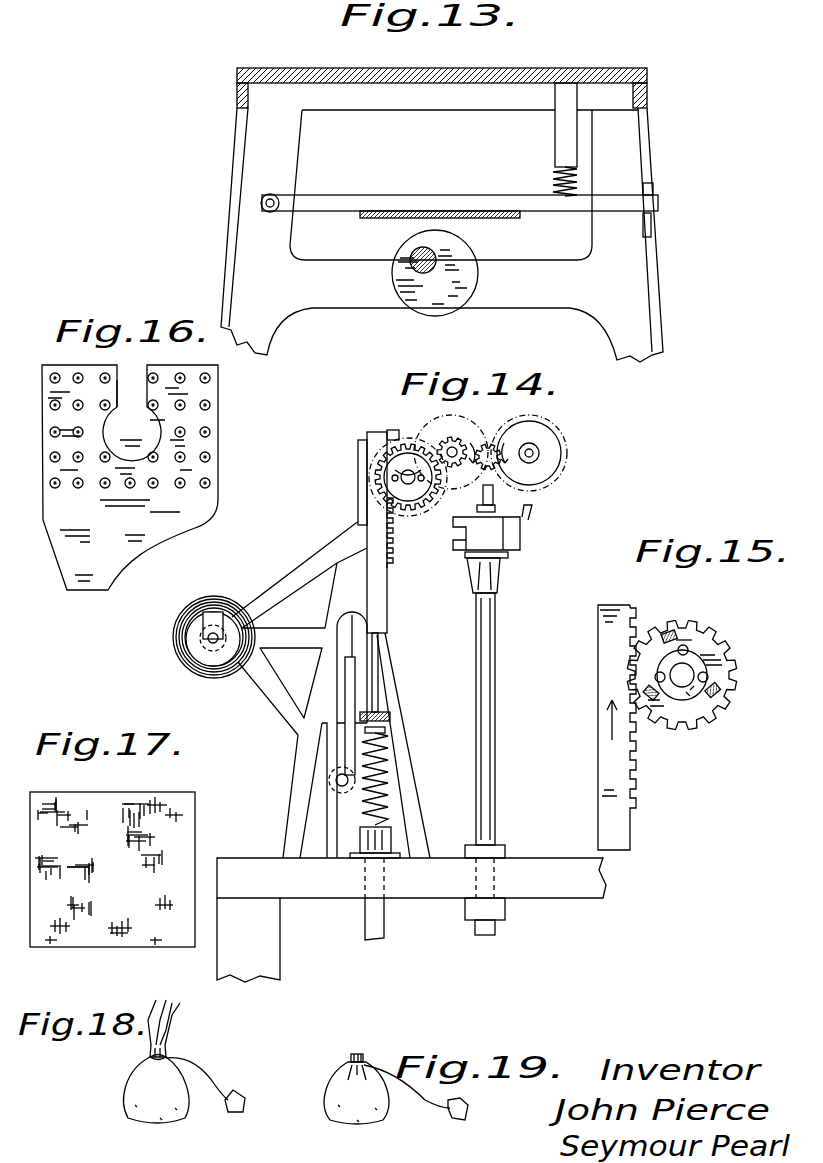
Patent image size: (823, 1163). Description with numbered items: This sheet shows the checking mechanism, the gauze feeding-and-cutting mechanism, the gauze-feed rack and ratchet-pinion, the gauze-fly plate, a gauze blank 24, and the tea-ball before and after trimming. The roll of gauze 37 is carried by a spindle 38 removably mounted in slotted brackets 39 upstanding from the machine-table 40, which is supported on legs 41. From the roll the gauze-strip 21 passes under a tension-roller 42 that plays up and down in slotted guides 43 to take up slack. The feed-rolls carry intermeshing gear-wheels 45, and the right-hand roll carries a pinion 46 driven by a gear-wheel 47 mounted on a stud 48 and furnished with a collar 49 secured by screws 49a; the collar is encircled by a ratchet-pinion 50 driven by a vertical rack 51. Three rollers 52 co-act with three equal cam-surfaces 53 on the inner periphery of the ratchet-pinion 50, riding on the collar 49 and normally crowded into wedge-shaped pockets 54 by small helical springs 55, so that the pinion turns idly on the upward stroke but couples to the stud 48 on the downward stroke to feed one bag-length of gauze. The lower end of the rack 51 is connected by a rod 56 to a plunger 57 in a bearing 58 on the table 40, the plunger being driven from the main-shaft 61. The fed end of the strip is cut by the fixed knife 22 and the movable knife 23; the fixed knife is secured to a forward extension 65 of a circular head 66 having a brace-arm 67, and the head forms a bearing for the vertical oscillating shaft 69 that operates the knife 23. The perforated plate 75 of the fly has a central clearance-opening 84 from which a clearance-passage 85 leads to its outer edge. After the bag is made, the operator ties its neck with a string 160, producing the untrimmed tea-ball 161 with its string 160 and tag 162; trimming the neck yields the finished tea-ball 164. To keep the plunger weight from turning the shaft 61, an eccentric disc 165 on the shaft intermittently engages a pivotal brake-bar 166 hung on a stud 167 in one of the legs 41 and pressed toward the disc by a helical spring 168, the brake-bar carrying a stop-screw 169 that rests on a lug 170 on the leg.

In FIG. 14, the gauze-strip 21 is at (338, 624).
In FIG. 14, the fixed knife 22 is at (529, 514).
In FIG. 14, the knife 23 is at (505, 562).
In FIG. 17, the abrasive plate 24 is at (190, 833).
In FIG. 14, the roll of gauze 37 is at (174, 646).
In FIG. 14, the spindle 38 is at (210, 643).
In FIG. 14, the slotted brackets 39 is at (312, 568).
In FIG. 13, the machine-table 40 is at (608, 80).
In FIG. 14, the machine-table 40 is at (576, 888).
In FIG. 13, the legs 41 is at (232, 254).
In FIG. 14, the legs 41 is at (278, 970).
In FIG. 14, the tension-roller 42 is at (336, 780).
In FIG. 14, the slotted guides 43 is at (327, 815).
In FIG. 14, the intermeshing gear-wheels 45 is at (448, 421).
In FIG. 14, the pinion 46 is at (458, 443).
In FIG. 14, the gear-wheel 47 is at (420, 498).
In FIG. 14, the stud 48 is at (408, 468).
In FIG. 15, the stud 48 is at (700, 668).
In FIG. 15, the collar 49 is at (676, 700).
In FIG. 14, the screws 49a is at (408, 505).
In FIG. 14, the ratchet-pinion 50 is at (425, 520).
In FIG. 15, the ratchet-pinion 50 is at (733, 677).
In FIG. 14, the vertical rack 51 is at (388, 587).
In FIG. 15, the vertical rack 51 is at (600, 772).
In FIG. 15, the rollers 52 is at (690, 640).
In FIG. 15, the cam-surfaces 53 is at (702, 650).
In FIG. 15, the wedge-shaped pockets 54 is at (690, 700).
In FIG. 15, the helical springs 55 is at (676, 640).
In FIG. 14, the rod 56 is at (380, 697).
In FIG. 14, the plunger 57 is at (386, 923).
In FIG. 14, the bearing 58 is at (395, 840).
In FIG. 13, the main-shaft 61 is at (412, 255).
In FIG. 14, the forward extension 65 is at (521, 539).
In FIG. 14, the circular head 66 is at (471, 556).
In FIG. 14, the brace-arm 67 is at (508, 548).
In FIG. 14, the oscillating shaft 69 is at (496, 701).
In FIG. 16, the perforated plate 75 is at (212, 471).
In FIG. 16, the central clearance-opening 84 is at (98, 440).
In FIG. 16, the clearance-passage 85 is at (135, 385).
In FIG. 18, the string 160 is at (208, 1075).
In FIG. 19, the string 160 is at (418, 1103).
In FIG. 18, the untrimmed tea-ball 161 is at (130, 1095).
In FIG. 18, the tag 162 is at (245, 1098).
In FIG. 19, the tag 162 is at (458, 1120).
In FIG. 19, the finished tea-ball 164 is at (345, 1115).
In FIG. 13, the eccentric disc 165 is at (468, 262).
In FIG. 13, the brake-bar 166 is at (455, 208).
In FIG. 13, the stud 167 is at (272, 195).
In FIG. 13, the helical spring 168 is at (556, 175).
In FIG. 13, the stop-screw 169 is at (655, 190).
In FIG. 13, the lug 170 is at (652, 230).